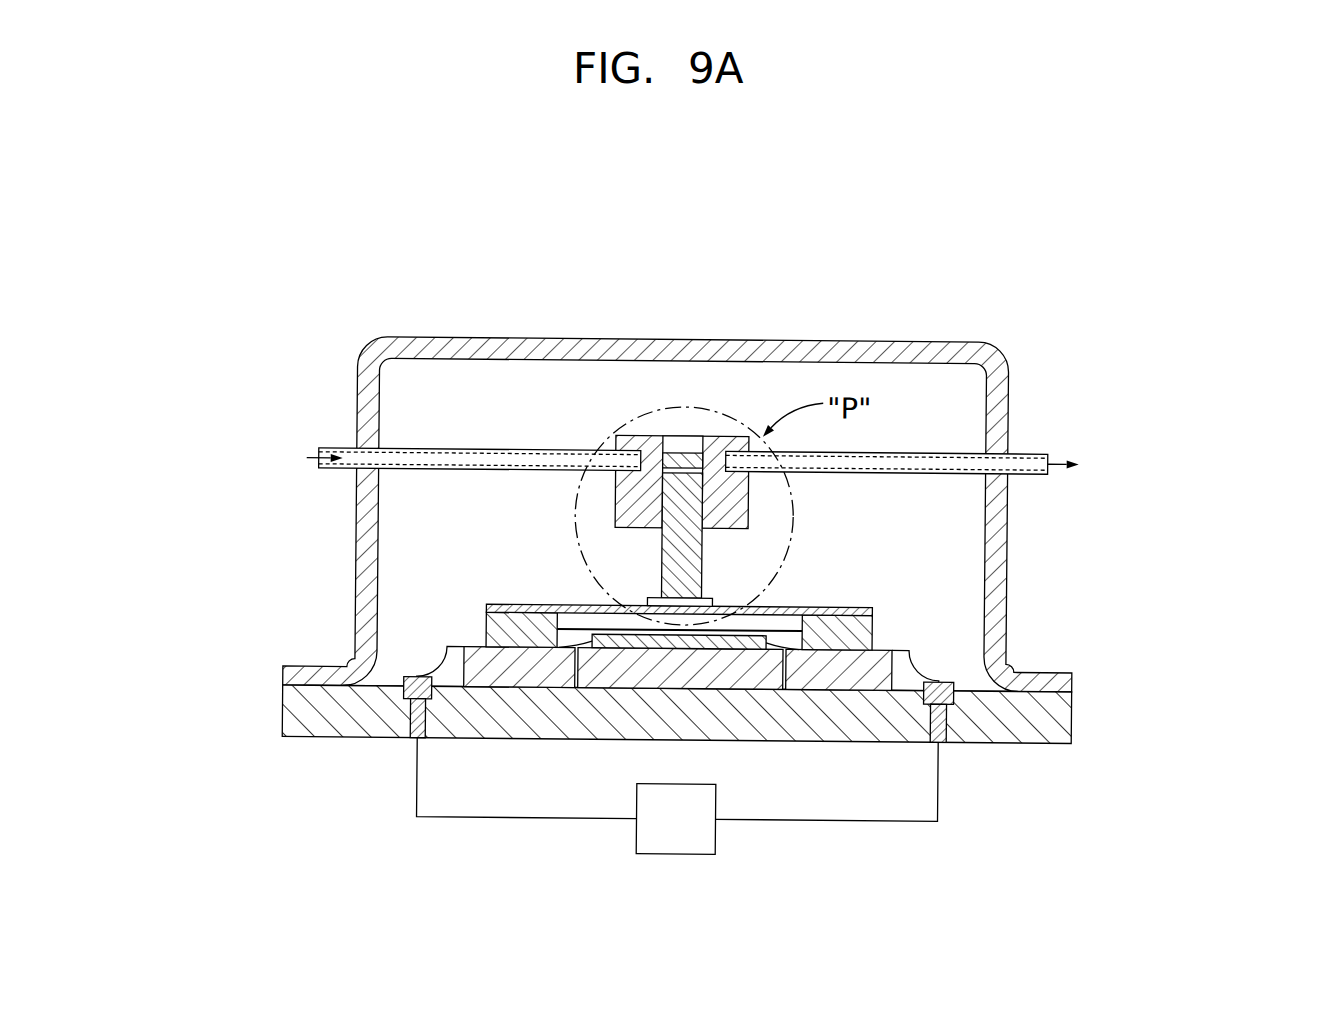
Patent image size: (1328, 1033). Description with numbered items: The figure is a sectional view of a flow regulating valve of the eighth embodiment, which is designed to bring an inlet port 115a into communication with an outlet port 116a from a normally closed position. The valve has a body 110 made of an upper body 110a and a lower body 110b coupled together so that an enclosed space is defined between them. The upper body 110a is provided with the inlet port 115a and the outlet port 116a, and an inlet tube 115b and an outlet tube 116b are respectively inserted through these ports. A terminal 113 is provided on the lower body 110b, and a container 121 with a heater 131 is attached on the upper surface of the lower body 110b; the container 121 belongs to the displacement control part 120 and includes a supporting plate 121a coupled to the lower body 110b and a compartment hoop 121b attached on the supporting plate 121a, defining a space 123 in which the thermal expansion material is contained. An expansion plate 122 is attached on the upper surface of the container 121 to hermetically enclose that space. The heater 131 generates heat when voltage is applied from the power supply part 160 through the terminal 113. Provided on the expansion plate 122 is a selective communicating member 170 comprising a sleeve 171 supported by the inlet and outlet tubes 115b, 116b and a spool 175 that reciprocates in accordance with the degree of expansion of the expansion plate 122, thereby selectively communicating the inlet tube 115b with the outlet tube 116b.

The body 110 is at (575, 538).
The upper body 110a is at (290, 671).
The lower body 110b is at (290, 716).
The terminal 113 is at (394, 740).
The inlet port 115a is at (355, 479).
The inlet tube 115b is at (343, 452).
The outlet port 116a is at (1000, 475).
The outlet tube 116b is at (1030, 452).
The displacement control part 120 is at (871, 609).
The container 121 is at (844, 635).
The supporting plate 121a is at (880, 666).
The compartment hoop 121b is at (875, 630).
The expansion plate 122 is at (868, 606).
The space 123 is at (790, 626).
The heater 131 is at (757, 629).
The power supply part 160 is at (638, 842).
The selective communicating member 170 is at (573, 520).
The sleeve 171 is at (627, 507).
The spool 175 is at (660, 563).